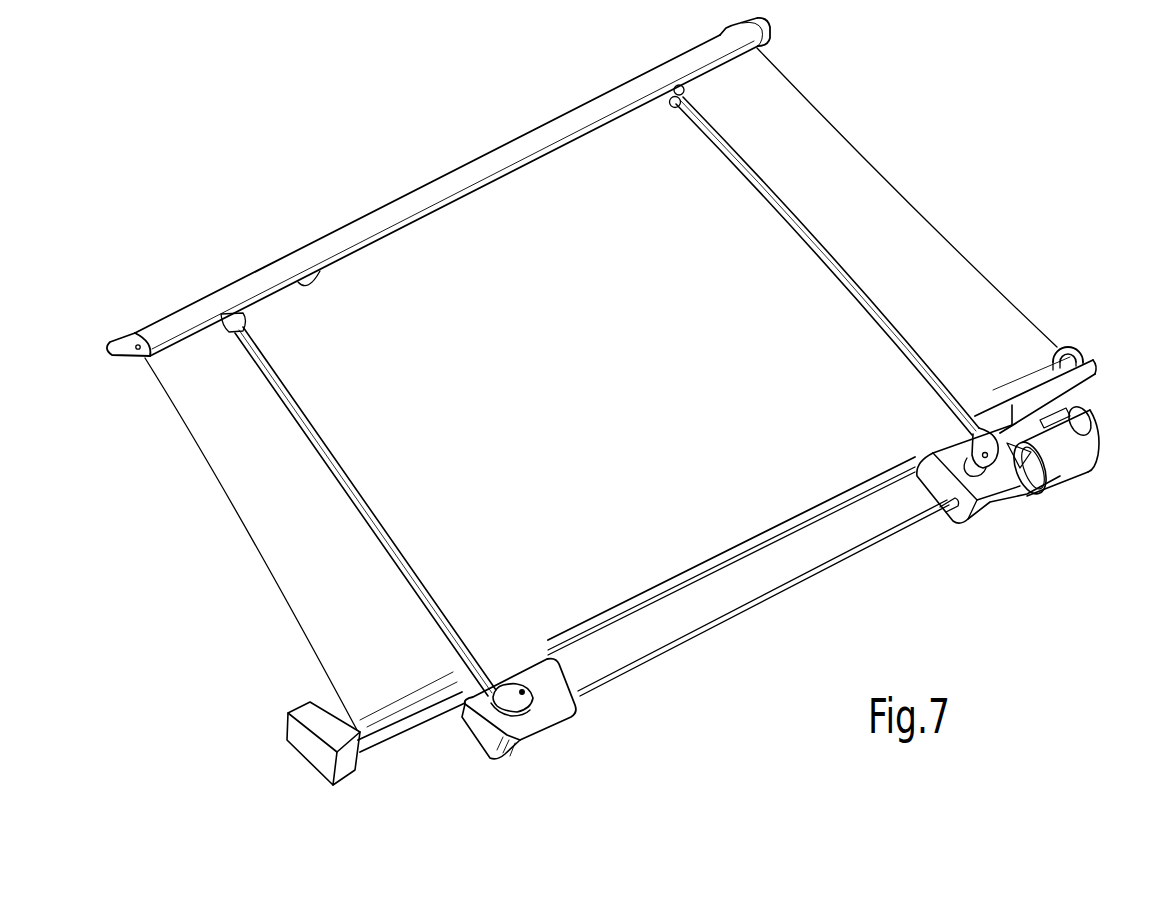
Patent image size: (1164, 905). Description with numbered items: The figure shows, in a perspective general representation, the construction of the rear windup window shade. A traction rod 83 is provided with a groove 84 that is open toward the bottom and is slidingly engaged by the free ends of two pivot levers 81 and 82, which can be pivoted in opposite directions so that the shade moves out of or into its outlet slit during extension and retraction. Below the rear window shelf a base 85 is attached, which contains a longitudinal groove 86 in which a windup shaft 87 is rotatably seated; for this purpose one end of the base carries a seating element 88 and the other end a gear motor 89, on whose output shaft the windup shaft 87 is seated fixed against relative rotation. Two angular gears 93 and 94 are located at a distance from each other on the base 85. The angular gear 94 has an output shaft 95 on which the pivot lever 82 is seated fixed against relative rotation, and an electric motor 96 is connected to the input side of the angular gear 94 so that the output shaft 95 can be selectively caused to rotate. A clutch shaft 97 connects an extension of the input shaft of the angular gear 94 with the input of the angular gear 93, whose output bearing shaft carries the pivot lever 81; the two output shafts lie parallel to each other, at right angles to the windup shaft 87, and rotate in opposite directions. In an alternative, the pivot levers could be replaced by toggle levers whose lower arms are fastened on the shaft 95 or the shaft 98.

The pivot lever 81 is at (352, 484).
The pivot lever 82 is at (817, 250).
The traction rod 83 is at (470, 178).
The groove 84 is at (320, 278).
The base 85 is at (370, 738).
The longitudinal groove 86 is at (1097, 363).
The windup shaft 87 is at (1063, 342).
The seating element 88 is at (1074, 348).
The gear motor 89 is at (302, 748).
The angular gear 93 is at (523, 762).
The angular gear 94 is at (995, 508).
The output shaft 95 is at (972, 446).
The electric motor 96 is at (1057, 467).
The clutch shaft 97 is at (710, 627).
The shaft 98 is at (522, 688).